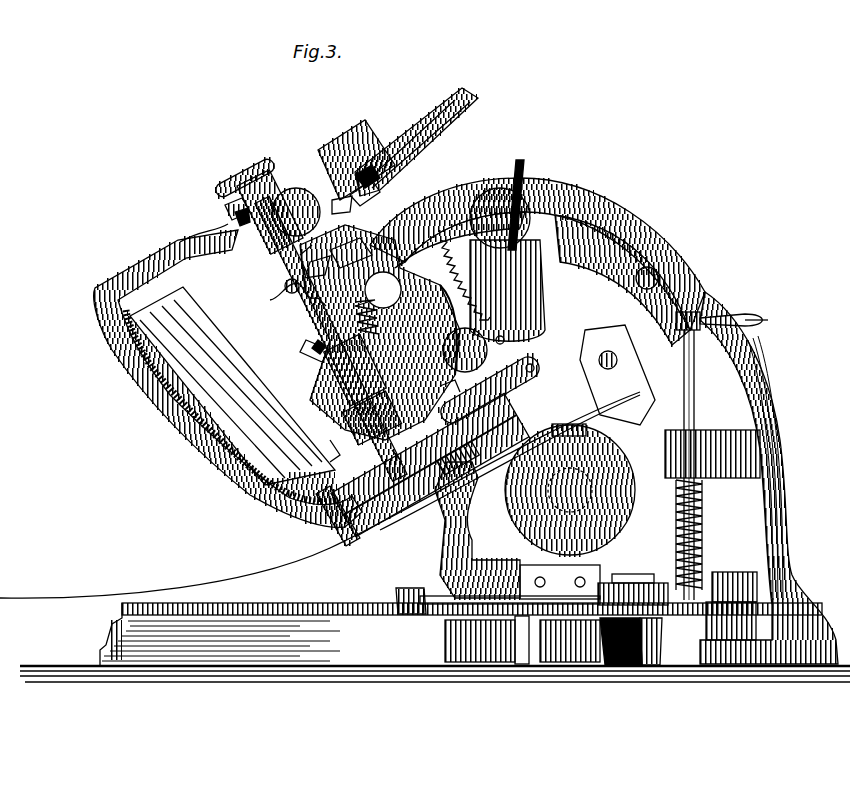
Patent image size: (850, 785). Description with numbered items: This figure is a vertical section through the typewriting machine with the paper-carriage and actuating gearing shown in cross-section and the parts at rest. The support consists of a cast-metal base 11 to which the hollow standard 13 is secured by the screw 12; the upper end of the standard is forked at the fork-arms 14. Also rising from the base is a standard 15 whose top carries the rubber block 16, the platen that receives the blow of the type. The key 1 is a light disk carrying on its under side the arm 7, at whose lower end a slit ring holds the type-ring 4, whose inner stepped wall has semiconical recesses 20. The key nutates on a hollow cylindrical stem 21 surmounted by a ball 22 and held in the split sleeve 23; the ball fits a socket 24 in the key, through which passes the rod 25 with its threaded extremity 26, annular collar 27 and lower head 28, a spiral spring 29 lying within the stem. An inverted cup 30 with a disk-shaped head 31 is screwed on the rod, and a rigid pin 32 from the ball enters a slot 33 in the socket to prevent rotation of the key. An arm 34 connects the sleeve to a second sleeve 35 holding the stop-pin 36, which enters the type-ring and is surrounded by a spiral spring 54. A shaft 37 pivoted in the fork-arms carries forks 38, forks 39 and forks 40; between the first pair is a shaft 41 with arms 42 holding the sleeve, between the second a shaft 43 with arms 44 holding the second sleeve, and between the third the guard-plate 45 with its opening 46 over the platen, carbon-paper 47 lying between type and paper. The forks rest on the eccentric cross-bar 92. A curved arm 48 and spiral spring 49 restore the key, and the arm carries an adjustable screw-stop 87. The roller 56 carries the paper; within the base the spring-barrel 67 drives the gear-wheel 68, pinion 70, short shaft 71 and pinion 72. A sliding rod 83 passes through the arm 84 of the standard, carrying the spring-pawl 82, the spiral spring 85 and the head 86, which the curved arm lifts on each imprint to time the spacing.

The key 1 is at (470, 98).
The type-ring 4 is at (528, 394).
The arm 7 is at (228, 378).
The base 11 is at (461, 623).
The screw 12 is at (731, 621).
The hollow standard 13 is at (786, 382).
The fork-arms 14 is at (592, 215).
The standard 15 is at (452, 548).
The block of rubber 16 is at (455, 470).
The semiconical recesses 20 is at (392, 450).
The hollow cylindrical stem 21 is at (342, 238).
The ball 22 is at (295, 240).
The split sleeve 23 is at (318, 300).
The socket 24 is at (232, 208).
The rod 25 is at (345, 160).
The threaded extremity 26 is at (262, 175).
The annular collar 27 is at (288, 168).
The head 28 is at (340, 336).
The spiral spring 29 is at (279, 296).
The inverted cup 30 is at (236, 200).
The disk-shaped head 31 is at (246, 172).
The rigid pin 32 is at (366, 184).
The slot 33 is at (350, 200).
The arm 34 is at (428, 318).
The sleeve 35 is at (372, 382).
The pin 36 is at (362, 406).
The shaft 37 is at (528, 240).
The forks 38 is at (475, 198).
The forks 39 is at (536, 300).
The forks 40 is at (640, 300).
The shaft 41 is at (388, 222).
The arms 42 is at (340, 248).
The shaft 43 is at (466, 345).
The arms 44 is at (451, 385).
The guard-plate 45 is at (600, 408).
The opening 46 is at (448, 480).
The carbon-paper 47 is at (355, 510).
The curved arm 48 is at (560, 205).
The spiral spring 49 is at (448, 256).
The spiral spring 54 is at (380, 328).
The roller 56 is at (524, 542).
The spring-barrel 67 is at (448, 636).
The gear-wheel 68 is at (440, 626).
The pinion 70 is at (636, 630).
The short shaft 71 is at (630, 635).
The pinion 72 is at (626, 580).
The spring-pawl 82 is at (714, 572).
The sliding rod 83 is at (696, 378).
The arm 84 is at (760, 452).
The spiral spring 85 is at (704, 502).
The head 86 is at (722, 312).
The adjustable screw-stop 87 is at (522, 170).
The cross-bar 92 is at (658, 274).